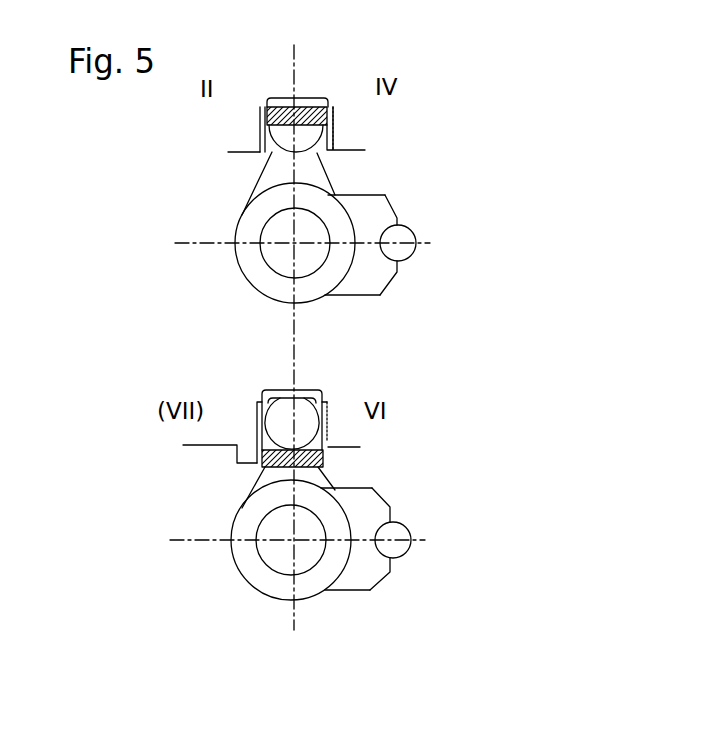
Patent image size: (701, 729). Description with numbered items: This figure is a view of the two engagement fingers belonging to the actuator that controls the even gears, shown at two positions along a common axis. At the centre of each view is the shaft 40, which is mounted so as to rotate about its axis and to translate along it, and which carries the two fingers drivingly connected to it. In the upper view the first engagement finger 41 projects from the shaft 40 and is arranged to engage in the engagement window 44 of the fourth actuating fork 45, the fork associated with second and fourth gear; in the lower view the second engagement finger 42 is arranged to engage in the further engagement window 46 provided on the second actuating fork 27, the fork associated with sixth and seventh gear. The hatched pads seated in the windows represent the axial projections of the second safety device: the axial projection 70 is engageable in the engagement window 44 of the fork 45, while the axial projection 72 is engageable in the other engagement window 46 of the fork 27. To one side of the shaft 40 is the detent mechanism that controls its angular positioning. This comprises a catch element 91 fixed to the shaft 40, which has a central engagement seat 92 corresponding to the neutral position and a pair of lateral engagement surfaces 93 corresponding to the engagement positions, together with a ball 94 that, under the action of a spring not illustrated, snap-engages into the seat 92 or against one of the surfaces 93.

The second actuating fork 27 is at (218, 437).
The shaft 40 is at (280, 260).
The first engagement finger 41 is at (260, 137).
The second engagement finger 42 is at (277, 412).
The engagement window 44 is at (270, 150).
The fourth actuating fork 45 is at (350, 142).
The further engagement window 46 is at (328, 452).
The axial projection 70 is at (308, 107).
The axial projection 72 is at (330, 467).
The catch element 91 is at (360, 283).
The central engagement seat 92 is at (400, 225).
The lateral engagement surfaces 93 is at (388, 202).
The ball 94 is at (408, 262).